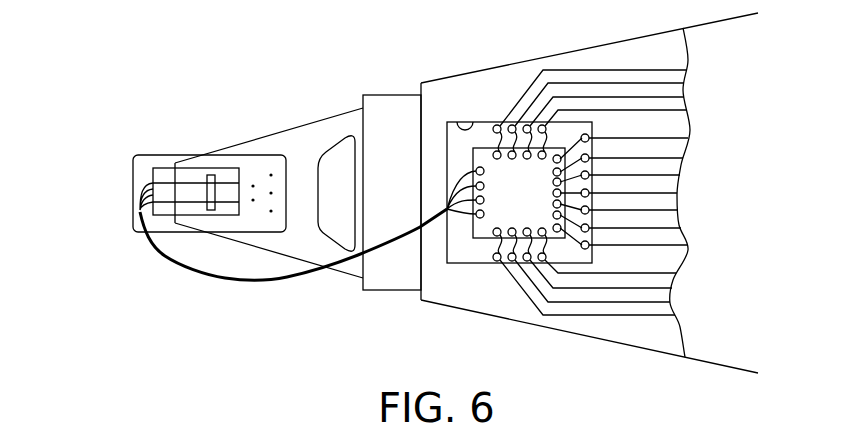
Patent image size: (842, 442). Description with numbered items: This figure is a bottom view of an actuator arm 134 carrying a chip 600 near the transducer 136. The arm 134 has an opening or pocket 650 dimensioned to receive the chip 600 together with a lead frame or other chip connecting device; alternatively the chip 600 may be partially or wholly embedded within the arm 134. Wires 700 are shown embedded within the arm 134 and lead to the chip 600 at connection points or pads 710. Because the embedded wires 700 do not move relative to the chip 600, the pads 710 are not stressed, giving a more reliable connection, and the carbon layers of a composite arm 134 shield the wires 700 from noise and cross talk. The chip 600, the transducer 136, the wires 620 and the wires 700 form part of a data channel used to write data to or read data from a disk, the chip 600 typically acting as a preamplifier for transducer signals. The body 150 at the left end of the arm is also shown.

The actuator arm 134 is at (786, 207).
The transducer 136 is at (132, 183).
The housing 150 is at (283, 140).
The chip 600 is at (542, 206).
The wires 620 is at (235, 277).
The pocket 650 is at (457, 122).
The wires 700 is at (657, 139).
The connection points or pads 710 is at (480, 232).